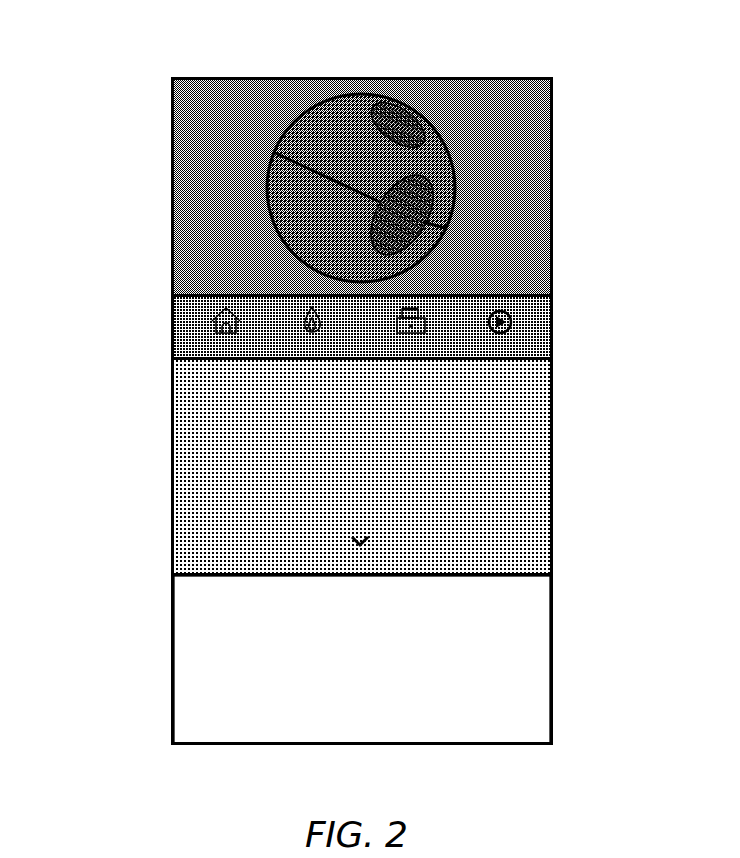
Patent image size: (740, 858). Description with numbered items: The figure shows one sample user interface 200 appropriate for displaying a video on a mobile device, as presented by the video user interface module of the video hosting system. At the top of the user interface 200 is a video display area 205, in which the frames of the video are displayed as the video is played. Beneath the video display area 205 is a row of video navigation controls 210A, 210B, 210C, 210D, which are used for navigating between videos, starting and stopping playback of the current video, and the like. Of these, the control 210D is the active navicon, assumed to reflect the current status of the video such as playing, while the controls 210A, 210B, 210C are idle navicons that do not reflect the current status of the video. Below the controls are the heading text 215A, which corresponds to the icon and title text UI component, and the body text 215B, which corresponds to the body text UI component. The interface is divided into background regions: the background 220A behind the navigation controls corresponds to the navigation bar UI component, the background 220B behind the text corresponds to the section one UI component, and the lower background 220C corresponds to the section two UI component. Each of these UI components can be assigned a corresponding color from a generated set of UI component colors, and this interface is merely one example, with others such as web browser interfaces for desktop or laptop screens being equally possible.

The user interface 200 is at (118, 42).
The video display area 205 is at (166, 80).
The video navigation control 210A is at (237, 333).
The video navigation control 210B is at (325, 327).
The video navigation control 210C is at (425, 326).
The video navigation control 210D is at (513, 326).
The heading text 215A is at (198, 412).
The body text 215B is at (198, 477).
The background 220A is at (553, 302).
The background 220B is at (535, 471).
The background 220C is at (535, 637).